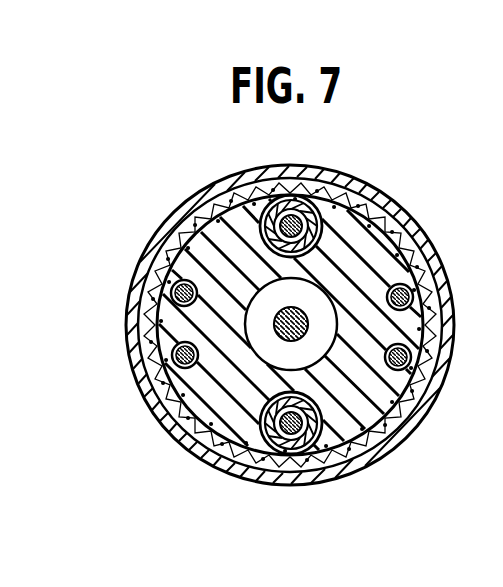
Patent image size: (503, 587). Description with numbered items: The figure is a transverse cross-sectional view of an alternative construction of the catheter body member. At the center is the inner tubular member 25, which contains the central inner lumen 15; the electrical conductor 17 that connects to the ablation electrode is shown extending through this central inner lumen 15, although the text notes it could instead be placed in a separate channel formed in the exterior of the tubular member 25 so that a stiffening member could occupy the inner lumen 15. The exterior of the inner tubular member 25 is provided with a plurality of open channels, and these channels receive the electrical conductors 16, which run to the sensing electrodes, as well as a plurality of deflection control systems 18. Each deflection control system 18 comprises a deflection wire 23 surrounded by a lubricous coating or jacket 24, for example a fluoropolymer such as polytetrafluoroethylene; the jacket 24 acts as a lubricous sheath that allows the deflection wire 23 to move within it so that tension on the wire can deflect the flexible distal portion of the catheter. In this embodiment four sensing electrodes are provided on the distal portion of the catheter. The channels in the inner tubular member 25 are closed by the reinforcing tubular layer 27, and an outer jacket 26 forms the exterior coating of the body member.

The inner lumen 15 is at (255, 348).
The electrical conductors 16 is at (171, 293).
The electrical conductor 17 is at (300, 314).
The deflection control systems 18 is at (230, 207).
The deflection wire 23 is at (308, 200).
The jacket 24 is at (285, 198).
The inner tubular member 25 is at (378, 418).
The outer jacket 26 is at (390, 230).
The tubular layer 27 is at (190, 250).